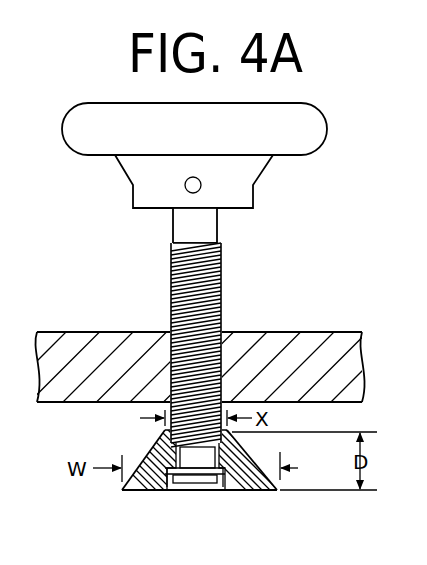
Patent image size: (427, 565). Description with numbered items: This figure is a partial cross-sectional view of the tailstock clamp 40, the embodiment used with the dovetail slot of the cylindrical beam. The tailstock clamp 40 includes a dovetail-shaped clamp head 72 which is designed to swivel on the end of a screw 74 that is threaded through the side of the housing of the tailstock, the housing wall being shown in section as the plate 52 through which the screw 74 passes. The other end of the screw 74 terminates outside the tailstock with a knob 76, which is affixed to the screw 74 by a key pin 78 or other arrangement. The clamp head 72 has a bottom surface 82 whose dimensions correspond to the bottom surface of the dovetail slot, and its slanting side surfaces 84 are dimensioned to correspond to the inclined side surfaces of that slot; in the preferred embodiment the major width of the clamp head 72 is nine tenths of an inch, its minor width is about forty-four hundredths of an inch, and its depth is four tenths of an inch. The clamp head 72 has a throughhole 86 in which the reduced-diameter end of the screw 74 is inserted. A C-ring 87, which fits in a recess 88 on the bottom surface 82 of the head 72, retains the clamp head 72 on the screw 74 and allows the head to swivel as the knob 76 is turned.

The tailstock clamp 40 is at (297, 267).
The panel 52 is at (323, 342).
The clamp head 72 is at (267, 492).
The screw 74 is at (180, 268).
The knob 76 is at (313, 125).
The key pin 78 is at (201, 184).
The bottom surface 82 is at (139, 490).
The slanting side surfaces 84 is at (148, 455).
The throughhole 86 is at (204, 455).
The C-ring 87 is at (226, 490).
The recess 88 is at (173, 490).